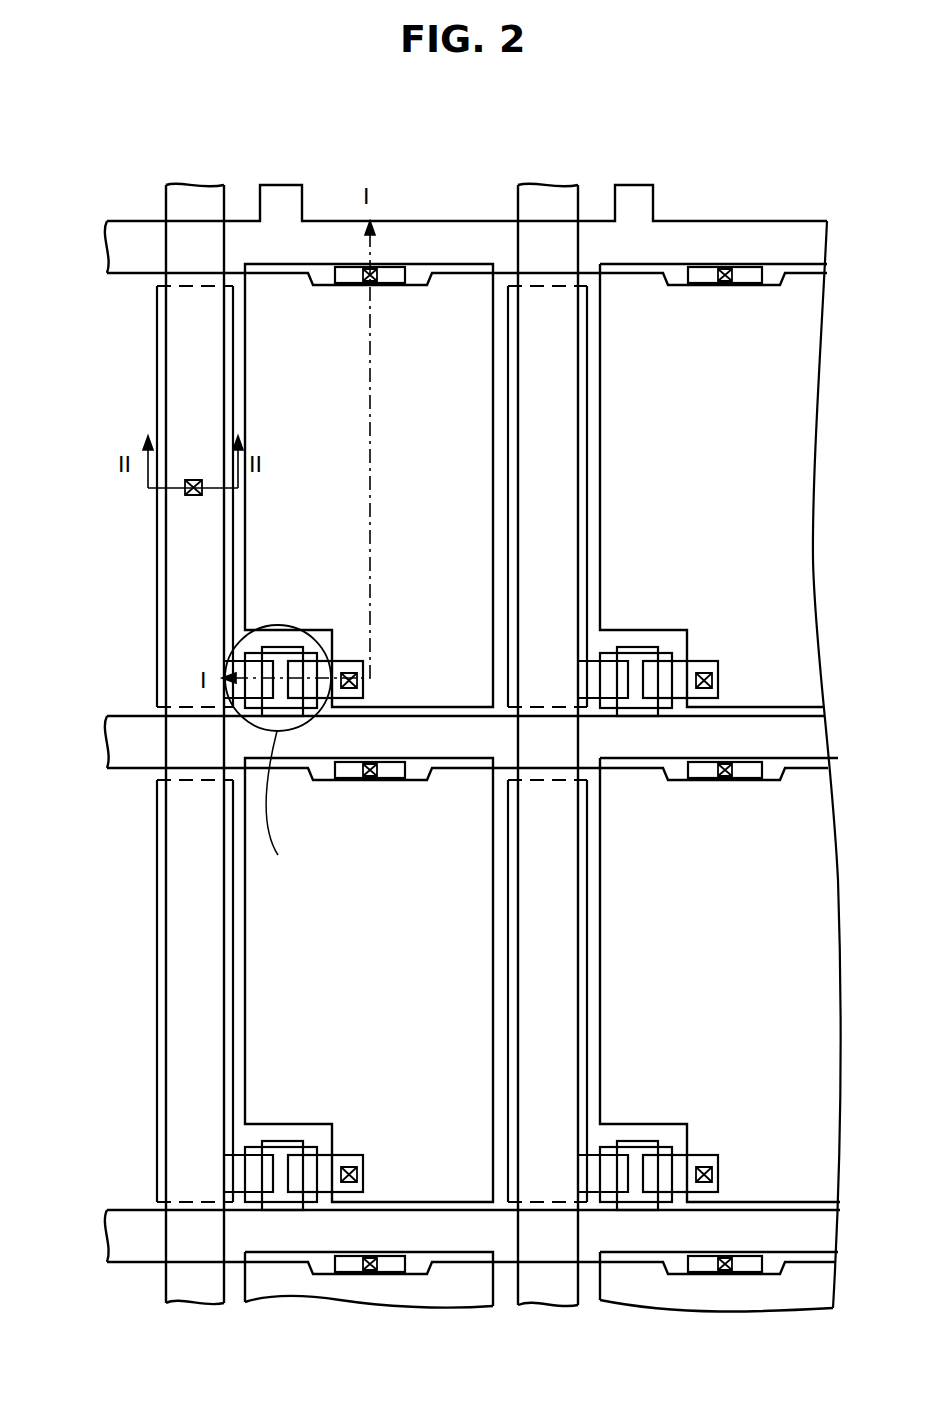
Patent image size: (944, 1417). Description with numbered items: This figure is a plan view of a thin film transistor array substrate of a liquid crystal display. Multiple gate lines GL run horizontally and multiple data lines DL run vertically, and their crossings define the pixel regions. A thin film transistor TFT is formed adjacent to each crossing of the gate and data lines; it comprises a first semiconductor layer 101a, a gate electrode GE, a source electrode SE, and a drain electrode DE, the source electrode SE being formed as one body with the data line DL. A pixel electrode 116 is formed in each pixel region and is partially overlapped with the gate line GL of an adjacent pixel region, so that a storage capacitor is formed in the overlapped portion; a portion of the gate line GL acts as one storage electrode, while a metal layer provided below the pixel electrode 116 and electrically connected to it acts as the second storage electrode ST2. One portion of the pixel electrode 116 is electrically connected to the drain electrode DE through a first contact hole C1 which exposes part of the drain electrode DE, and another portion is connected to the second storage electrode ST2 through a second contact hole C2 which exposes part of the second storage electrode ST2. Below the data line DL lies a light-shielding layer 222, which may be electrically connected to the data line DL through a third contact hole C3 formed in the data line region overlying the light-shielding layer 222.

The gate line GL is at (122, 742).
The data line DL is at (178, 204).
The pixel electrode 116 is at (494, 280).
The light-shielding layer 222 is at (157, 533).
The second storage electrode ST2 is at (395, 281).
The second contact hole C2 is at (352, 282).
The third contact hole C3 is at (190, 480).
The thin film transistor TFT is at (306, 725).
The gate electrode GE is at (277, 647).
The source electrode SE is at (240, 667).
The drain electrode DE is at (322, 667).
The first contact hole C1 is at (352, 678).
The first semiconductor layer 101a is at (287, 805).